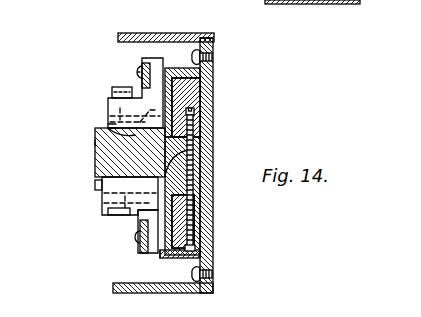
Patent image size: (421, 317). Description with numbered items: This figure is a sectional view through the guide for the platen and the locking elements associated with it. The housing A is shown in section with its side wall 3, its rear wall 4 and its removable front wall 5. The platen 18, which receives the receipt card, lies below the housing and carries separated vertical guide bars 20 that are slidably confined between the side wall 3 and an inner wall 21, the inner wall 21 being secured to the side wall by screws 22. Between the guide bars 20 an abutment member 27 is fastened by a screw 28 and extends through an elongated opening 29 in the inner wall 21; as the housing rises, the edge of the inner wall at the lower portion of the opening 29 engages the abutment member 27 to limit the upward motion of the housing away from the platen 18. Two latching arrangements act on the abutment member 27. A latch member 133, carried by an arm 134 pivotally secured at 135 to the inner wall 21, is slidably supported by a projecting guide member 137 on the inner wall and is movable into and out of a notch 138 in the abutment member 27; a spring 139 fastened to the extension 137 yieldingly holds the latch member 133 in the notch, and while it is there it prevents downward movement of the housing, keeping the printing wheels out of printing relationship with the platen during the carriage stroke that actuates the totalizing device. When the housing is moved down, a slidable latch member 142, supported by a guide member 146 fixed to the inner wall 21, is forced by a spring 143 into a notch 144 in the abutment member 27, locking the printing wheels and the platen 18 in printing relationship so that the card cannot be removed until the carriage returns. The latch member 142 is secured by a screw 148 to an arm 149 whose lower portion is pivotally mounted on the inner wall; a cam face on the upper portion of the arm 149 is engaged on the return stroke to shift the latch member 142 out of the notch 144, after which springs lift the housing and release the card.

The platen 18 is at (52, 3).
The rear wall 4 is at (118, 38).
The removable front wall 5 is at (113, 287).
The side wall 3 is at (215, 88).
The vertical guide bars 20 is at (196, 96).
The housing A is at (215, 36).
The inner wall 21 is at (175, 67).
The screws 22 is at (216, 58).
The abutment member 27 is at (97, 163).
The screw 28 is at (212, 178).
The elongated opening 29 is at (206, 164).
The arm 134 is at (196, 214).
The latch member 133 is at (103, 202).
The pivot 135 is at (140, 248).
The guide member 137 is at (137, 236).
The notch 138 is at (95, 185).
The spring 139 is at (117, 215).
The slidable latch member 142 is at (107, 102).
The spring 143 is at (115, 86).
The notch 144 is at (100, 127).
The guide member 146 is at (95, 143).
The screw 148 is at (139, 66).
The arm 149 is at (143, 56).